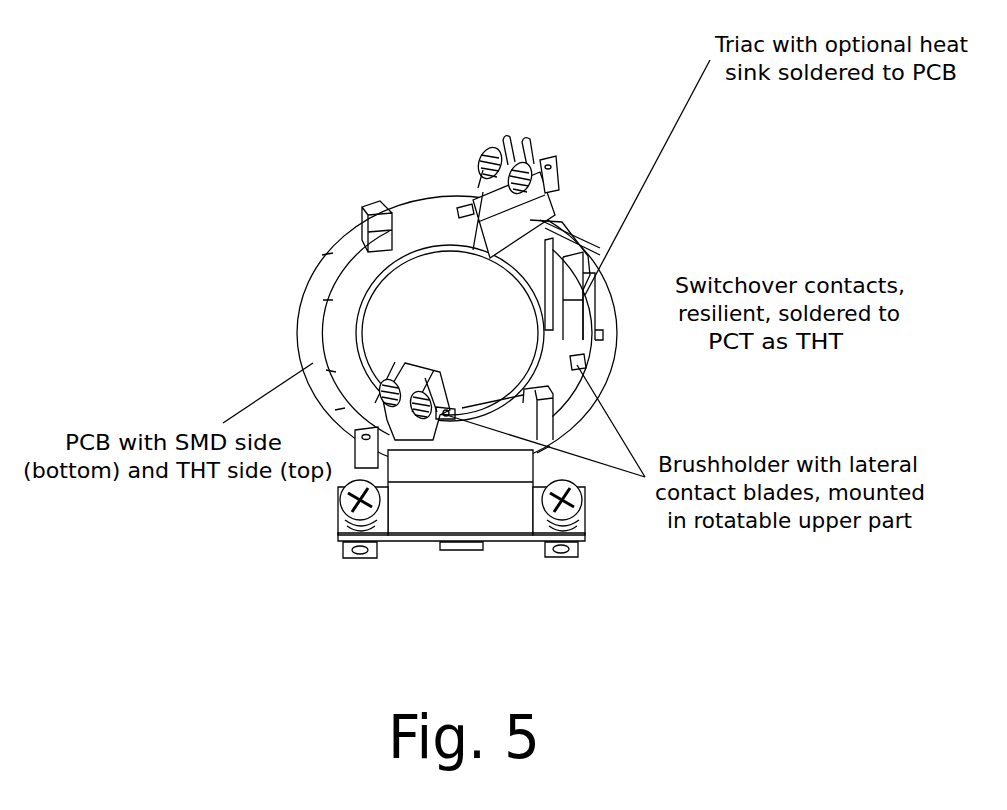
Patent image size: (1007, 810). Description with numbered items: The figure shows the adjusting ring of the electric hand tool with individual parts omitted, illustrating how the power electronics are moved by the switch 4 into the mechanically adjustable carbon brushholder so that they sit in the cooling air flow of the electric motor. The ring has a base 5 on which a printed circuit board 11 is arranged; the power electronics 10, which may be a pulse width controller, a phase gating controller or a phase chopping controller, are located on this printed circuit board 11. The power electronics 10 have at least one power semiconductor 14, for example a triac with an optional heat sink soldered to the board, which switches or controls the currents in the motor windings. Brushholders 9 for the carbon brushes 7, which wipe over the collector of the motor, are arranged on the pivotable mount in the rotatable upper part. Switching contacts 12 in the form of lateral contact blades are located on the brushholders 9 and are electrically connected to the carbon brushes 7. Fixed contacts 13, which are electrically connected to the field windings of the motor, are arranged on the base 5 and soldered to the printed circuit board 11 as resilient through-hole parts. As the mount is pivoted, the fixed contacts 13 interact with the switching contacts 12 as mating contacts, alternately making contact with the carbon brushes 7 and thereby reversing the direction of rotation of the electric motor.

The switch 4 is at (583, 358).
The base 5 is at (305, 298).
The carbon brushes 7 is at (495, 152).
The brushholders 9 is at (502, 217).
The power electronics 10 is at (528, 312).
The printed circuit board 11 is at (445, 207).
The switching contacts 12 is at (443, 416).
The fixed contacts 13 is at (558, 172).
The power semiconductor 14 is at (572, 352).